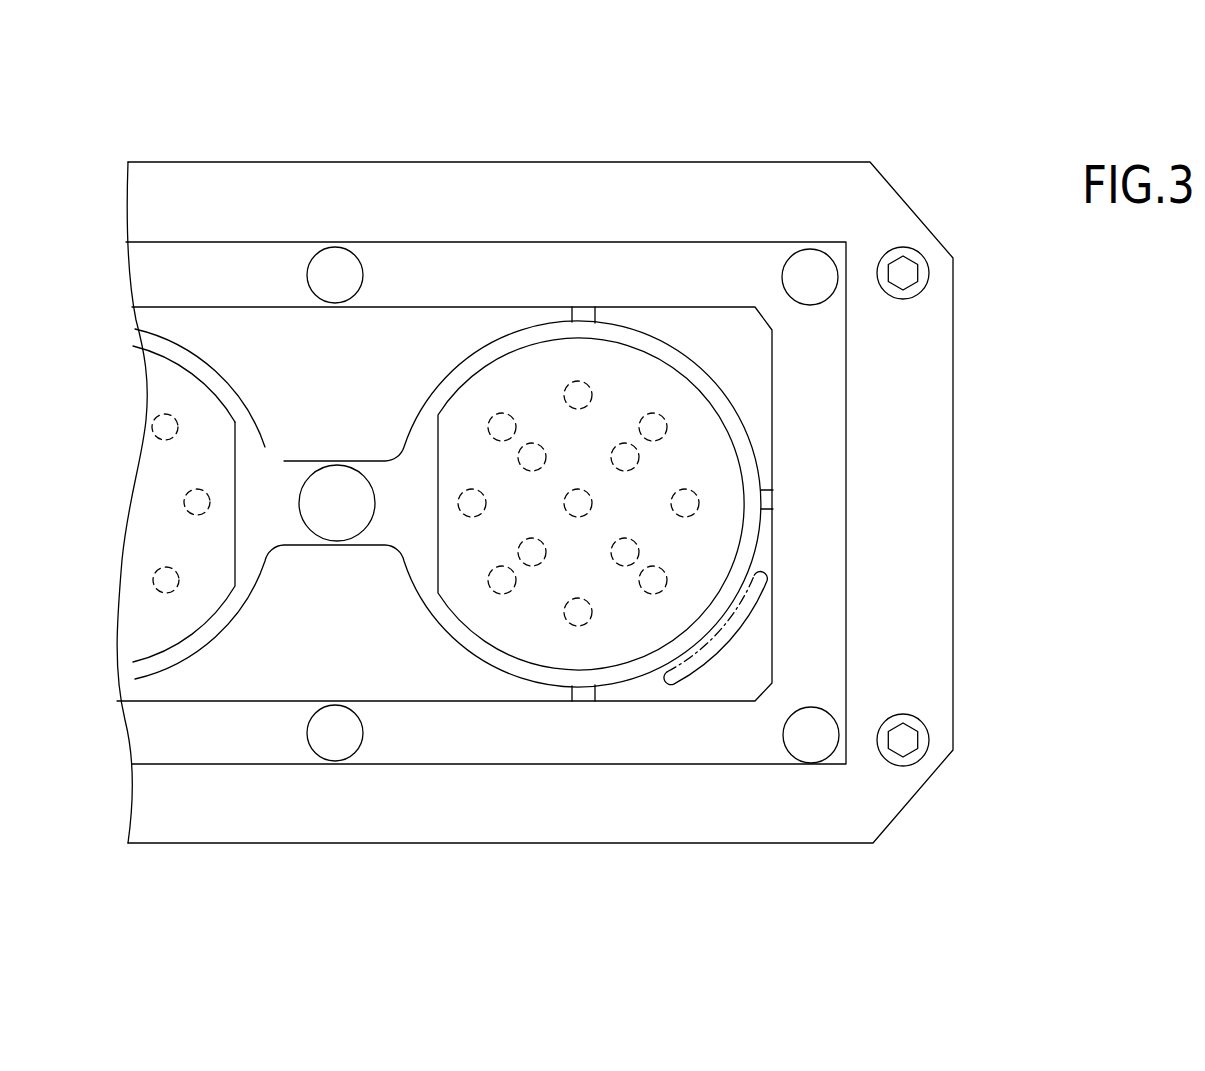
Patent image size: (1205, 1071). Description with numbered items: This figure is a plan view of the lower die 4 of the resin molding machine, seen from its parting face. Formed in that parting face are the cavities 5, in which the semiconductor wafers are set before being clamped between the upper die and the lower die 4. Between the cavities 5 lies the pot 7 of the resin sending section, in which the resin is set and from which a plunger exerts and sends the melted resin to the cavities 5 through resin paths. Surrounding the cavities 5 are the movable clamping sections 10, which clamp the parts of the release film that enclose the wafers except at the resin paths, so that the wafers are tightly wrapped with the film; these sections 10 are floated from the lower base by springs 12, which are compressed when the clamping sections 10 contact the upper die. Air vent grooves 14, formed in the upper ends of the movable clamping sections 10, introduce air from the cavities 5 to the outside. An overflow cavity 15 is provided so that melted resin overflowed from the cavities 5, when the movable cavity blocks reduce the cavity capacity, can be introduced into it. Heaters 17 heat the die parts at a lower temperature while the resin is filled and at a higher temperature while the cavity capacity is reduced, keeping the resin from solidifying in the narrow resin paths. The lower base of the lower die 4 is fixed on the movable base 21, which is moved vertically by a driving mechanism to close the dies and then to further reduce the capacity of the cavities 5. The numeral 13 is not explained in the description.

The lower die 4 is at (933, 169).
The cavity 5 is at (178, 364).
The pot 7 is at (335, 464).
The movable clamping section 10 is at (760, 418).
The spring 12 is at (335, 247).
The frame body 13 is at (837, 378).
The air vent groove 14 is at (584, 312).
The overflow cavity 15 is at (758, 587).
The heater 17 is at (172, 593).
The movable base 21 is at (913, 683).